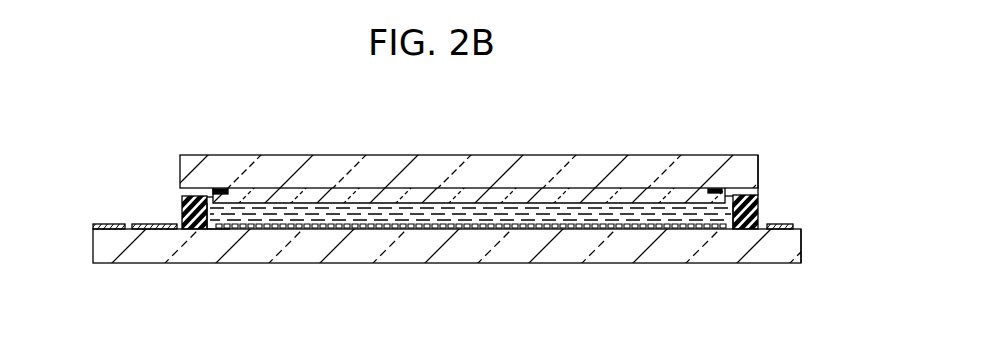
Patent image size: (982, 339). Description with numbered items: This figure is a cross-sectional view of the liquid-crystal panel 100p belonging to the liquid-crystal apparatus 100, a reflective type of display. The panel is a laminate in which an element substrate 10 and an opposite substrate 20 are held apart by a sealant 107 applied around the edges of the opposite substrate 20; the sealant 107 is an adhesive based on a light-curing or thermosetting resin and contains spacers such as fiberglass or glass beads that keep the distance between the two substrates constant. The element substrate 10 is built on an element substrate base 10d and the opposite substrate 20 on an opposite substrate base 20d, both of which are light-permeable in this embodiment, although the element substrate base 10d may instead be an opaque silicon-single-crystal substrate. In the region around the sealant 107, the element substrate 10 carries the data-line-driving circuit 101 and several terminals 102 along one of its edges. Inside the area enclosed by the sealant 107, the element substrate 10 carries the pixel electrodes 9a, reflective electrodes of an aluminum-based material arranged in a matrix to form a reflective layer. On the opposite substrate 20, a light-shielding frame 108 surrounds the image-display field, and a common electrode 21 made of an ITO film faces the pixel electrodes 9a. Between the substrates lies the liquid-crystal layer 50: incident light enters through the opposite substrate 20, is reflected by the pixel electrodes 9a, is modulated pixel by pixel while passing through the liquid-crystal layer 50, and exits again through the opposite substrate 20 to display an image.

The liquid-crystal apparatus 100 is at (745, 106).
The liquid-crystal panel 100p is at (455, 213).
The element substrate 10 is at (614, 250).
The element substrate base 10d is at (778, 253).
The opposite substrate 20 is at (635, 166).
The opposite substrate base 20d is at (762, 170).
The common electrode 21 is at (268, 190).
The sealant 107 is at (178, 202).
The frame 108 is at (217, 190).
The terminals 102 is at (95, 223).
The data-line-driving circuit 101 is at (137, 223).
The liquid-crystal layer 50 is at (218, 226).
The pixel electrodes 9a is at (433, 228).